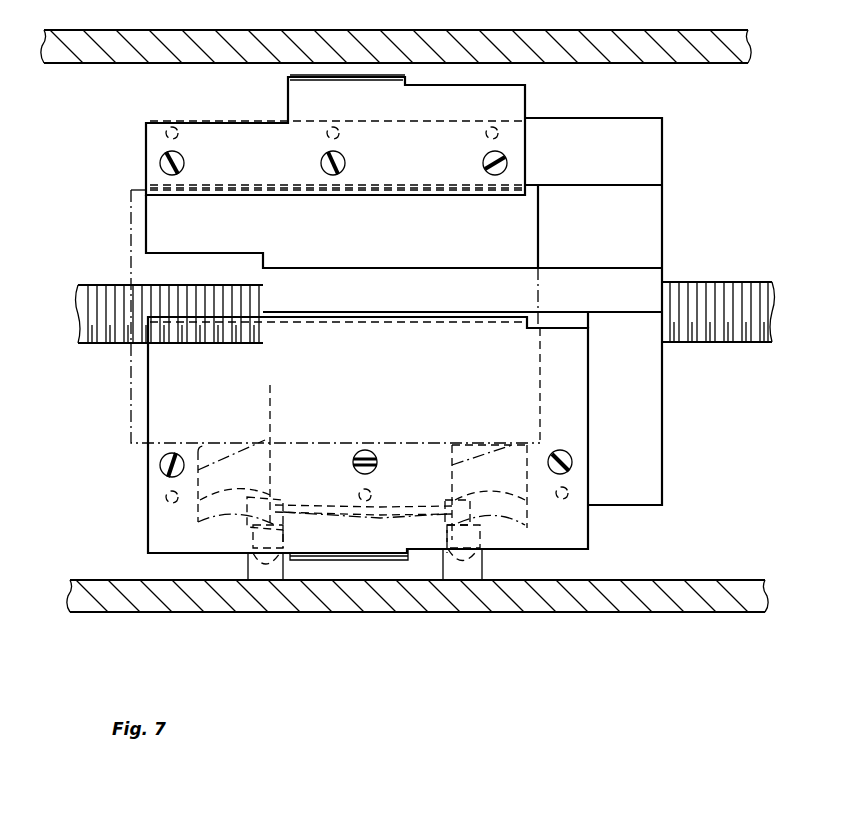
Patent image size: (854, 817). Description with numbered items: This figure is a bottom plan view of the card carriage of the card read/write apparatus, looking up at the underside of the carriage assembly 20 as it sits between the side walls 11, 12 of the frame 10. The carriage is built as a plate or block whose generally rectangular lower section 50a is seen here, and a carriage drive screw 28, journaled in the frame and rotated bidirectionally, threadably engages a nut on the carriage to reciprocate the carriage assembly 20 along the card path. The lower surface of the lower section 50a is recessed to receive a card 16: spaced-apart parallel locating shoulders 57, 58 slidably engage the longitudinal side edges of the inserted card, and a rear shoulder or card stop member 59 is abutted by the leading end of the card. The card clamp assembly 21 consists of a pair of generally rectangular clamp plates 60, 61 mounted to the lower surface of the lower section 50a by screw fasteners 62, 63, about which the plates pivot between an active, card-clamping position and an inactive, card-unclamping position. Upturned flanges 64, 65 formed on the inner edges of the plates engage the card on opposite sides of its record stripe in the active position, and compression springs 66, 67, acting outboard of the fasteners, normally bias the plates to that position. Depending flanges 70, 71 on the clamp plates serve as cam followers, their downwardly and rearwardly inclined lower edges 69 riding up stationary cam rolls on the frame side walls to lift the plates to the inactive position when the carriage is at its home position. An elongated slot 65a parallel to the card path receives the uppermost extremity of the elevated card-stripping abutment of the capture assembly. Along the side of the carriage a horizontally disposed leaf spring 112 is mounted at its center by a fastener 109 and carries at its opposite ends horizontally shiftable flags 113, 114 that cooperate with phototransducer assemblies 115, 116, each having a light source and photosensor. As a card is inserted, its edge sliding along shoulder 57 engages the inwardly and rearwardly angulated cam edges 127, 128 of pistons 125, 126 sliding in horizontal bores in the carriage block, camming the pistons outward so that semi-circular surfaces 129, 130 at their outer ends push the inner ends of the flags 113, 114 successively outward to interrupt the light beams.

The frame 10 is at (752, 42).
The side wall 11 is at (672, 612).
The side wall 12 is at (668, 50).
The card 16 is at (540, 248).
The carriage assembly 20 is at (692, 228).
The card clamp assembly 21 is at (108, 412).
The carriage drive screw 28 is at (86, 306).
The lower section of carriage block 50a is at (664, 484).
The locating shoulder 57 is at (168, 443).
The locating shoulder 58 is at (415, 184).
The card stop member 59 is at (541, 323).
The clamp plate 60 is at (368, 435).
The clamp plate 61 is at (335, 136).
The screw fastener 62 is at (372, 452).
The screw fastener 63 is at (507, 168).
The upturned flange 64 is at (318, 322).
The upturned flange 65 is at (383, 197).
The elongated slot 65a is at (416, 292).
The compression spring 66 is at (572, 500).
The compression spring 67 is at (326, 134).
The inclined lower edge 69 is at (338, 78).
The cam follower flange 70 is at (330, 562).
The cam follower flange 71 is at (395, 76).
The fastener 109 is at (358, 528).
The leaf spring 112 is at (400, 508).
The flag 113 is at (243, 528).
The flag 114 is at (490, 552).
The phototransducer assembly 115 is at (262, 578).
The phototransducer assembly 116 is at (468, 578).
The piston 125 is at (276, 426).
The piston 126 is at (548, 441).
The cam edge 127 is at (268, 370).
The cam edge 128 is at (516, 420).
The semi-circular surface 129 is at (280, 489).
The semi-circular surface 130 is at (452, 495).